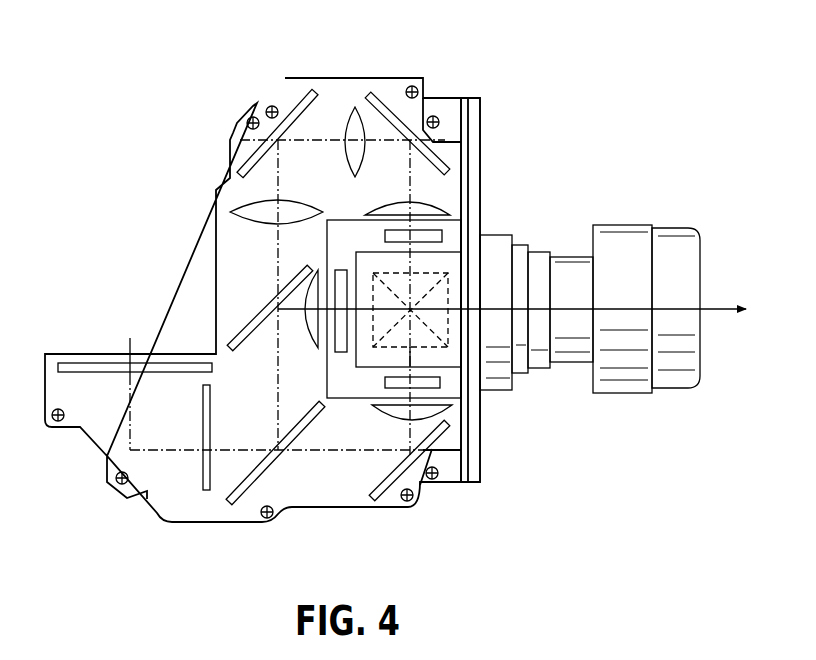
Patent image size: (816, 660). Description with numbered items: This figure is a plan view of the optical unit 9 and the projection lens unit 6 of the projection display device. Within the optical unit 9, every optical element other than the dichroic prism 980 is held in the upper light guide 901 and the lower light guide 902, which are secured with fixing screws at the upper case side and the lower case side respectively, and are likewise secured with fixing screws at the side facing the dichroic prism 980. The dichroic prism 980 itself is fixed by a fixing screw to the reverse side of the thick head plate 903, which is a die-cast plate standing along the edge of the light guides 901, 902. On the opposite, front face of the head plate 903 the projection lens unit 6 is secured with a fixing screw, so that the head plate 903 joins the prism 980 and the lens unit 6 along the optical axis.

The optical unit 9 is at (316, 66).
The upper light guide 901 is at (203, 257).
The lower light guide 902 is at (135, 363).
The dichroic prism 980 is at (446, 258).
The head plate 903 is at (480, 428).
The projection lens unit 6 is at (675, 219).